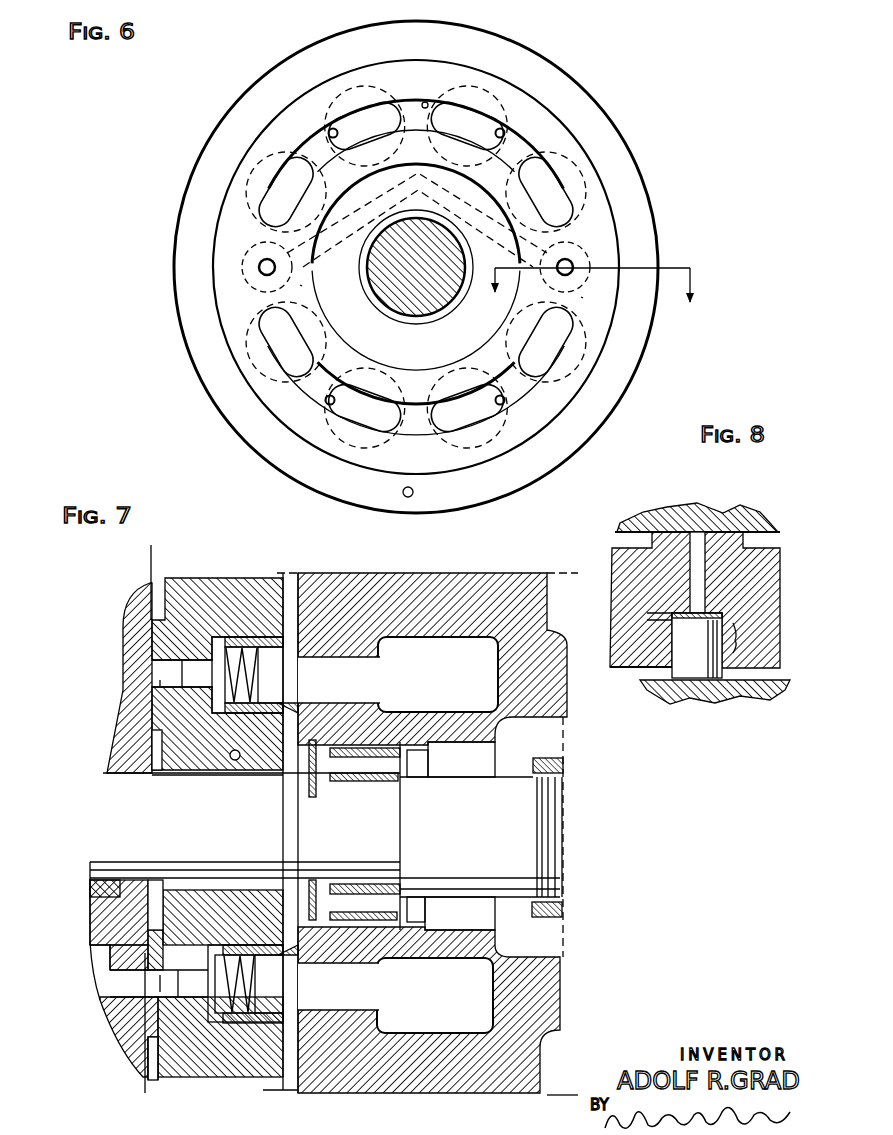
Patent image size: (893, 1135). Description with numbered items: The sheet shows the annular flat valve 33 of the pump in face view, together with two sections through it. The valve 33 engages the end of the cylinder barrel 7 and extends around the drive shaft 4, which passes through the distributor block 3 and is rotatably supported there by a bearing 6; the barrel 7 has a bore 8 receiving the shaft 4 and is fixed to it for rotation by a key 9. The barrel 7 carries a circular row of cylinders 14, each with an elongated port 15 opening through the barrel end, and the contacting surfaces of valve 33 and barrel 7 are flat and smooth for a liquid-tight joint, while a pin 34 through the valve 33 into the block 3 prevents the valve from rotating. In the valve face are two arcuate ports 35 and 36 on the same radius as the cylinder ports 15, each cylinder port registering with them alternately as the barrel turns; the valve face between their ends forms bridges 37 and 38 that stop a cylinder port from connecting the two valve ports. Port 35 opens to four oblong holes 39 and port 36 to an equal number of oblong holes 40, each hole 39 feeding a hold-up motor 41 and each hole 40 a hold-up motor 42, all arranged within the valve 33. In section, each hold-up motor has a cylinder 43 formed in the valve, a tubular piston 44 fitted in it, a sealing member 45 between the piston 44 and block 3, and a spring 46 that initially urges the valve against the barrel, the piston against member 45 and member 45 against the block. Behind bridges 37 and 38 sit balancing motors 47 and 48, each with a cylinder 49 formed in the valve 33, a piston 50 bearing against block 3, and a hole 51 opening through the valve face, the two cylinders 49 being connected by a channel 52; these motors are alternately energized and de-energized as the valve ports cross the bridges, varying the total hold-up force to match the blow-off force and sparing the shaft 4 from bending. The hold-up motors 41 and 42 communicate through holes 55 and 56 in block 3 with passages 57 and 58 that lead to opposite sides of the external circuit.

In FIG. 7, the distributor block 3 is at (560, 985).
In FIG. 8, the distributor block 3 is at (690, 697).
In FIG. 6, the drive shaft 4 is at (426, 278).
In FIG. 7, the drive shaft 4 is at (509, 828).
In FIG. 7, the bearing 6 is at (360, 772).
In FIG. 6, the cylinder barrel 7 is at (519, 7).
In FIG. 7, the cylinder barrel 7 is at (118, 755).
In FIG. 8, the cylinder barrel 7 is at (750, 517).
In FIG. 6, the bore 8 is at (589, 303).
In FIG. 7, the key 9 is at (90, 892).
In FIG. 7, the cylinder 14 is at (100, 947).
In FIG. 7, the port 15 is at (117, 992).
In FIG. 6, the valve 33 is at (152, 254).
In FIG. 7, the valve 33 is at (211, 1080).
In FIG. 8, the valve 33 is at (627, 555).
In FIG. 6, the pin 34 is at (414, 492).
In FIG. 6, the arcuate port 35 is at (426, 103).
In FIG. 7, the arcuate port 35 is at (160, 684).
In FIG. 6, the arcuate port 36 is at (420, 430).
In FIG. 7, the arcuate port 36 is at (160, 980).
In FIG. 6, the bridge 37 is at (300, 285).
In FIG. 6, the bridge 38 is at (583, 298).
In FIG. 8, the bridge 38 is at (667, 520).
In FIG. 6, the oblong hole 39 is at (331, 132).
In FIG. 7, the oblong hole 39 is at (193, 667).
In FIG. 6, the oblong hole 40 is at (326, 400).
In FIG. 7, the oblong hole 40 is at (197, 992).
In FIG. 6, the hold-up motor 41 is at (459, 86).
In FIG. 7, the hold-up motor 41 is at (268, 618).
In FIG. 6, the hold-up motor 42 is at (370, 362).
In FIG. 7, the hold-up motor 42 is at (252, 1044).
In FIG. 7, the cylinder 43 is at (220, 638).
In FIG. 7, the tubular piston 44 is at (281, 706).
In FIG. 7, the sealing member 45 is at (290, 705).
In FIG. 7, the spring 46 is at (218, 708).
In FIG. 6, the balancing motor 47 is at (243, 267).
In FIG. 6, the balancing motor 48 is at (591, 262).
In FIG. 8, the balancing motor 48 is at (740, 638).
In FIG. 8, the cylinder 49 is at (710, 620).
In FIG. 8, the piston 50 is at (672, 670).
In FIG. 6, the hole 51 is at (265, 259).
In FIG. 8, the hole 51 is at (697, 540).
In FIG. 6, the channel 52 is at (350, 232).
In FIG. 7, the channel 52 is at (236, 761).
In FIG. 8, the channel 52 is at (655, 620).
In FIG. 7, the hole 55 is at (370, 695).
In FIG. 7, the hole 56 is at (366, 1010).
In FIG. 7, the passage 57 is at (482, 667).
In FIG. 7, the passage 58 is at (482, 982).